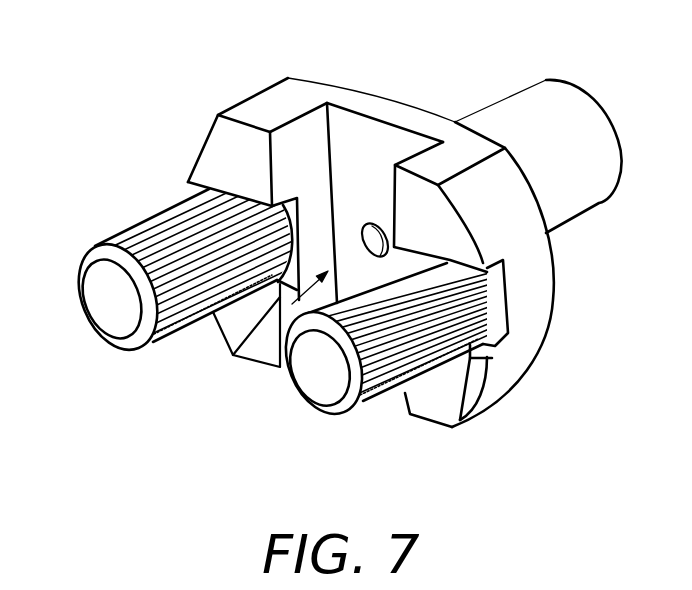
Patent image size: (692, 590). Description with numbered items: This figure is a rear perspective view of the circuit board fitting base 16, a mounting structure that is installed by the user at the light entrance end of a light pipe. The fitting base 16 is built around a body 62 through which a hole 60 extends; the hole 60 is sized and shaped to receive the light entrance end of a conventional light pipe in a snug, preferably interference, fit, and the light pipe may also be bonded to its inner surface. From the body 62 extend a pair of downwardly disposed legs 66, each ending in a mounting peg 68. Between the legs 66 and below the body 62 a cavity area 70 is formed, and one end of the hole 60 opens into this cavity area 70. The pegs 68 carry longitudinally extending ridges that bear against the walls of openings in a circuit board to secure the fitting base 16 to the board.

The fitting base 16 is at (533, 403).
The hole 60 is at (364, 220).
The body 62 is at (353, 100).
The legs 66 is at (265, 312).
The pegs 68 is at (143, 230).
The cavity area 70 is at (233, 355).